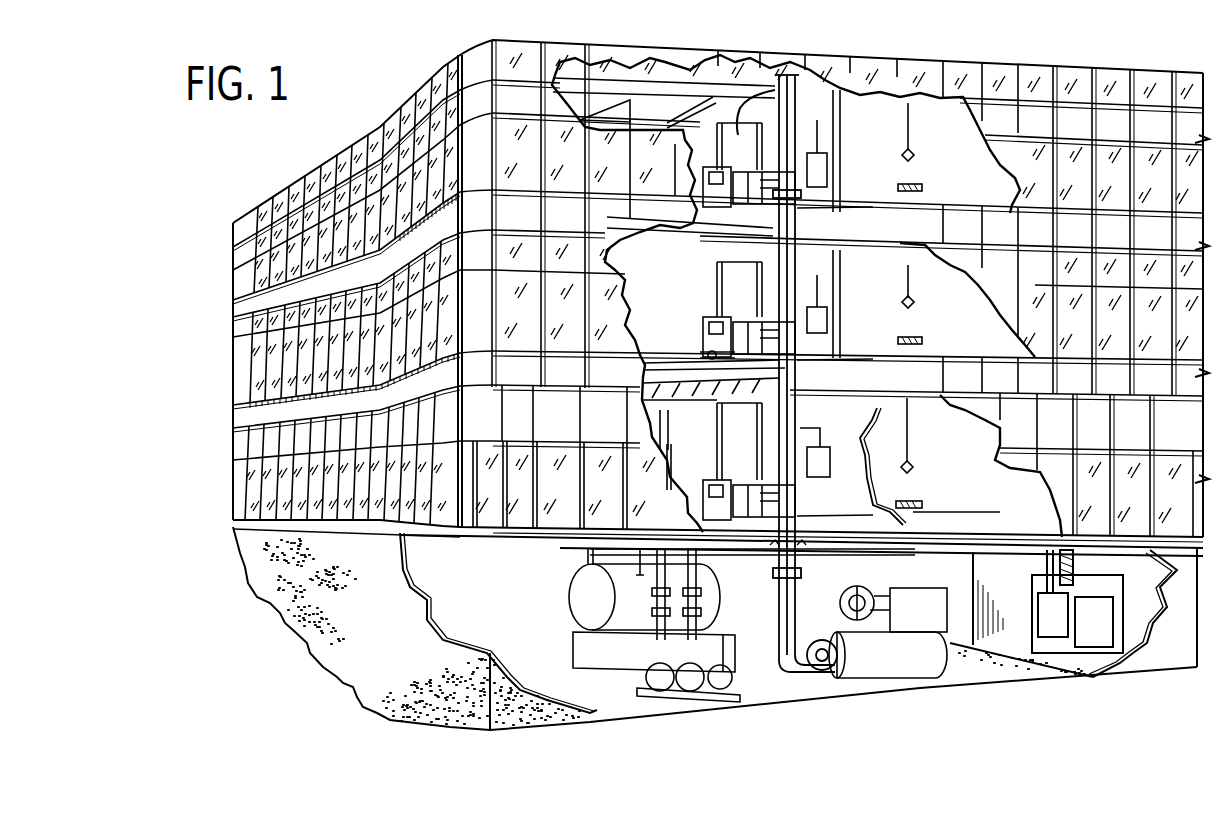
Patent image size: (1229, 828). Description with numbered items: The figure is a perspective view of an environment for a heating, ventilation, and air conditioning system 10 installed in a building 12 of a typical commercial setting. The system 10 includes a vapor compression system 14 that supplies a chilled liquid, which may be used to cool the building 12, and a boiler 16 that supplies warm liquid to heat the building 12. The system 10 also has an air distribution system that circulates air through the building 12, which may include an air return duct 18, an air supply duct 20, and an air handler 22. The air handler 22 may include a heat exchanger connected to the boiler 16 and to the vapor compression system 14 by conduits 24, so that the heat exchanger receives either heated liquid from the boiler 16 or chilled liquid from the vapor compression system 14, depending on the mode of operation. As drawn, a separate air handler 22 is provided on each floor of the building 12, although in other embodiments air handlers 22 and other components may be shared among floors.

The HVAC&R system 10 is at (990, 711).
The building 12 is at (1078, 66).
The vapor compression system 14 is at (898, 655).
The boiler 16 is at (573, 588).
The air return duct 18 is at (708, 354).
The air supply duct 20 is at (775, 95).
The air handler 22 is at (740, 318).
The conduits 24 is at (793, 517).